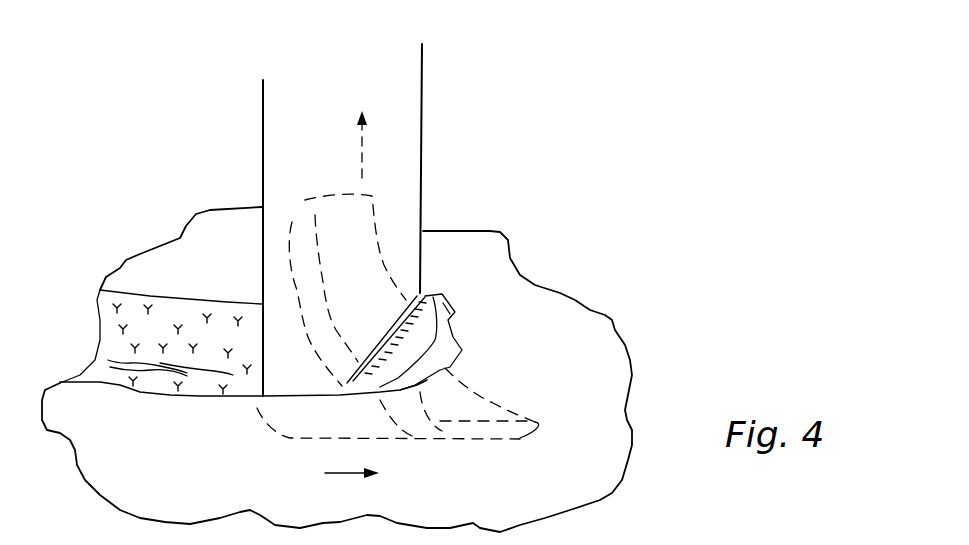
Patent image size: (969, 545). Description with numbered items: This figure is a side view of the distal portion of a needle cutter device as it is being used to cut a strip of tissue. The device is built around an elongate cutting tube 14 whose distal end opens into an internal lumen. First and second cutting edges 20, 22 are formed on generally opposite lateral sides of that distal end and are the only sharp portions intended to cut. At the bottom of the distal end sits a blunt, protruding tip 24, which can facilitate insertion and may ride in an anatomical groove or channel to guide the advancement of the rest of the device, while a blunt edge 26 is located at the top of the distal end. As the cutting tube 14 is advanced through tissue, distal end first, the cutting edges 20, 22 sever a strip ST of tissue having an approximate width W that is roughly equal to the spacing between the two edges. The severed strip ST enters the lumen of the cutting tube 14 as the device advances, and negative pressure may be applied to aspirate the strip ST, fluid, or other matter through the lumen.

The cutting tube 14 is at (403, 103).
The first cutting edge 20 is at (472, 382).
The second cutting edge 22 is at (430, 432).
The blunt protruding tip 24 is at (547, 423).
The blunt edge 26 is at (445, 306).
The strip of tissue ST is at (332, 233).
The width of tissue strip W is at (76, 287).